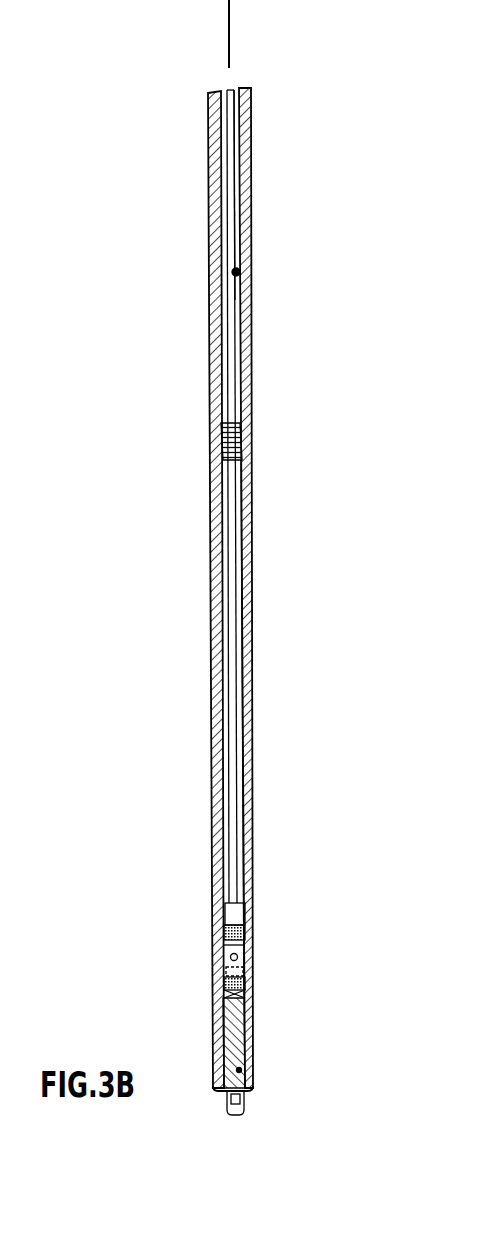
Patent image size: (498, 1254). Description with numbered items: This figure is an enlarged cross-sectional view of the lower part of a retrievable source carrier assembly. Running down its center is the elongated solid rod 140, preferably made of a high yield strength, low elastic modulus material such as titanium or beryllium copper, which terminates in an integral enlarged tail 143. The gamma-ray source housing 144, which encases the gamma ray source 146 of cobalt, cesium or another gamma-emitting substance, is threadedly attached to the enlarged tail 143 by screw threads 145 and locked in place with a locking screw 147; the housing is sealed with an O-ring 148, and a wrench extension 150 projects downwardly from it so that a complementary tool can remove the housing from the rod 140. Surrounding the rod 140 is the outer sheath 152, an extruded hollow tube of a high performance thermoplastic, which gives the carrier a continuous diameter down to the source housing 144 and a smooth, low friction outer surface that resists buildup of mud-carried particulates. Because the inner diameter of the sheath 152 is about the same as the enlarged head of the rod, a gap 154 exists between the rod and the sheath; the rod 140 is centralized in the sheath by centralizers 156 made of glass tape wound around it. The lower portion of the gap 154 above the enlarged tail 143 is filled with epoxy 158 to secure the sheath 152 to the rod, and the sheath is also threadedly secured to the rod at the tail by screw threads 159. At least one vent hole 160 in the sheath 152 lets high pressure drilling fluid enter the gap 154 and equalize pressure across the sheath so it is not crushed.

The elongated solid rod 140 is at (233, 323).
The integral enlarged tail 143 is at (226, 950).
The gamma-ray source housing 144 is at (250, 1000).
The screw threads 145 is at (250, 978).
The gamma ray source 146 is at (240, 1070).
The locking screw 147 is at (250, 935).
The O-ring 148 is at (250, 950).
The wrench extension 150 is at (248, 1106).
The outer sheath 152 is at (253, 710).
The gap 154 is at (238, 273).
The centralizers 156 is at (246, 433).
The epoxy 158 is at (252, 810).
The screw threads 159 is at (233, 932).
The vent hole 160 is at (248, 232).